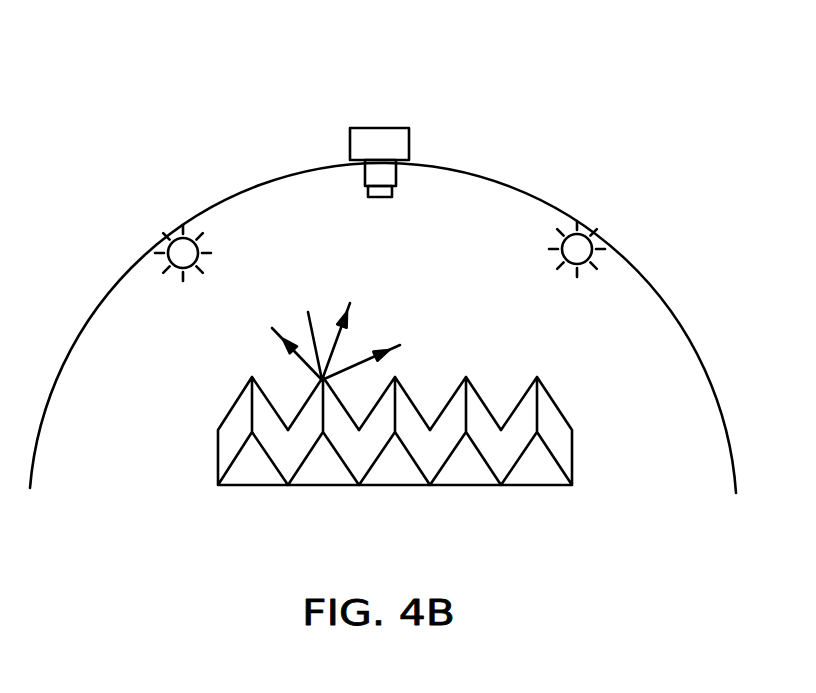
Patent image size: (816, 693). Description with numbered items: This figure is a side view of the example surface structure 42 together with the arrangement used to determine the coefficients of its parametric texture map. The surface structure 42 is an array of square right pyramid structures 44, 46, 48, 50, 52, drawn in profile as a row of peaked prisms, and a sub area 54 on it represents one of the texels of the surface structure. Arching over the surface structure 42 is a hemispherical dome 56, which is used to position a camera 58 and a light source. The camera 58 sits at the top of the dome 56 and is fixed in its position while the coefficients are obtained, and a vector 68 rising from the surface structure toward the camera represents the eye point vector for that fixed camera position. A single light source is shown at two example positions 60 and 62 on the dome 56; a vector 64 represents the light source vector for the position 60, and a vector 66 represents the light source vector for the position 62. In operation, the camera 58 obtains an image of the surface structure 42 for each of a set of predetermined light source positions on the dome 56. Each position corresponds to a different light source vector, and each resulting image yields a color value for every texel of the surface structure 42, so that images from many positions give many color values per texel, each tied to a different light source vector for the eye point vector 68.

The surface structure 42 is at (442, 415).
The square right pyramid structure 44 is at (253, 431).
The square right pyramid structure 46 is at (323, 431).
The square right pyramid structure 48 is at (394, 431).
The square right pyramid structure 50 is at (465, 431).
The square right pyramid structure 52 is at (536, 431).
The sub area 54 is at (306, 333).
The hemispherical dome 56 is at (647, 268).
The camera 58 is at (379, 128).
The light source position 60 is at (163, 233).
The light source position 62 is at (595, 228).
The light source vector 64 is at (300, 357).
The light source vector 66 is at (360, 363).
The eye point vector 68 is at (336, 340).